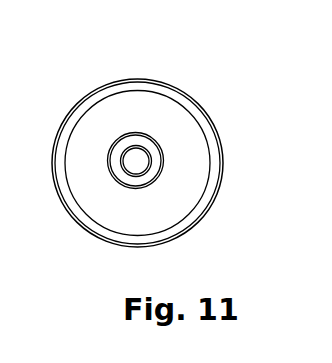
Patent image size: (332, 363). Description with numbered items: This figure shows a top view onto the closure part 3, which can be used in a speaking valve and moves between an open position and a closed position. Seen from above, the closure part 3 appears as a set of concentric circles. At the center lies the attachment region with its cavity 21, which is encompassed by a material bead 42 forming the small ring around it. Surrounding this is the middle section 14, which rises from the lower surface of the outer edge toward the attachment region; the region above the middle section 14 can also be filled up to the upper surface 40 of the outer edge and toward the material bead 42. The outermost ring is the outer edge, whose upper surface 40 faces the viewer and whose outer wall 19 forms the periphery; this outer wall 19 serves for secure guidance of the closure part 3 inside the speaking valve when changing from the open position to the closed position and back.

The closure part 3 is at (248, 85).
The middle section 14 is at (93, 126).
The outer wall 19 is at (90, 232).
The cavity 21 is at (137, 164).
The upper surface 40 is at (123, 81).
The material bead 42 is at (150, 173).